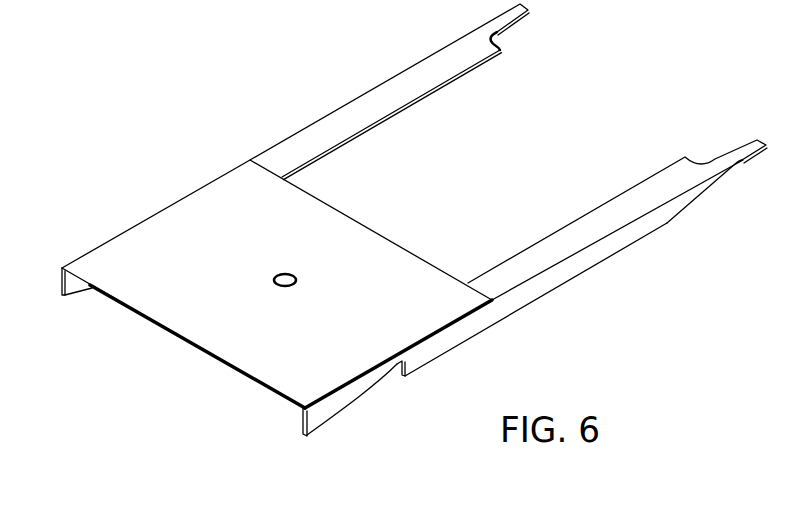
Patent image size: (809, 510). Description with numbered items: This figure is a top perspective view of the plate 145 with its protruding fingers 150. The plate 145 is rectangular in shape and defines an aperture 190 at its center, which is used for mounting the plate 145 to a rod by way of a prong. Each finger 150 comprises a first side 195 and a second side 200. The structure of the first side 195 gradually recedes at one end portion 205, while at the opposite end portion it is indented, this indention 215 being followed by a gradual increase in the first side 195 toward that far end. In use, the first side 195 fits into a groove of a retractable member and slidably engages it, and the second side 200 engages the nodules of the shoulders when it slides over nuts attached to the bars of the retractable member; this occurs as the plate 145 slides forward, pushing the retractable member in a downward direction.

The plate 145 is at (197, 202).
The protruding fingers 150 is at (368, 100).
The aperture 190 is at (286, 274).
The first side 195 is at (575, 270).
The second side 200 is at (568, 233).
The end portion 205 is at (700, 201).
The indention 215 is at (377, 380).